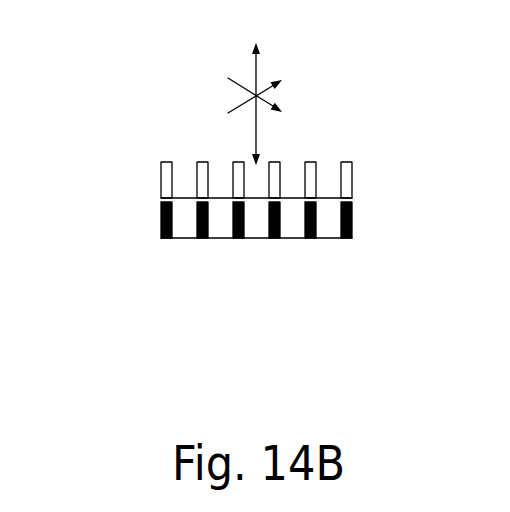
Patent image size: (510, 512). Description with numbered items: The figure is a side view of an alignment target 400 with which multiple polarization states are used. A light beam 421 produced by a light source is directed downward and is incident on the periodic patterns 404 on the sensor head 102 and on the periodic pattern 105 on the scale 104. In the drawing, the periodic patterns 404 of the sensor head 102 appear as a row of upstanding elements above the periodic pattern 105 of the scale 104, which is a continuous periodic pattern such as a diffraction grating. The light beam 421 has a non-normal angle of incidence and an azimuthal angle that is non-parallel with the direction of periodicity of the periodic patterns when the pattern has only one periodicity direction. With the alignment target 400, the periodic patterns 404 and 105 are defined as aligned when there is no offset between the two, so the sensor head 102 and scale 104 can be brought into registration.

The alignment target 400 is at (121, 69).
The periodic patterns 404 is at (129, 171).
The periodic pattern 105 is at (138, 224).
The sensor head 102 is at (327, 198).
The scale 104 is at (325, 238).
The light beam 421 is at (256, 70).